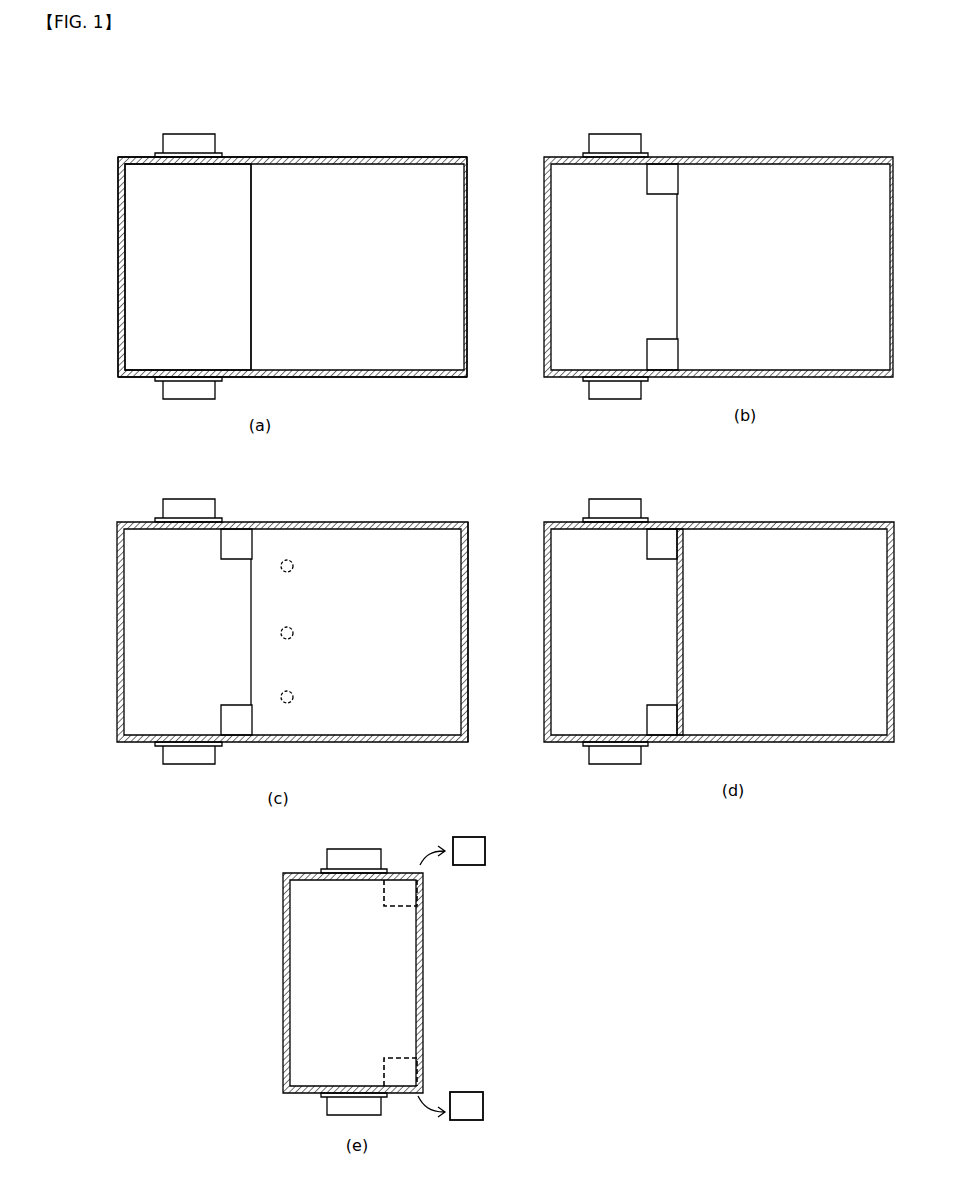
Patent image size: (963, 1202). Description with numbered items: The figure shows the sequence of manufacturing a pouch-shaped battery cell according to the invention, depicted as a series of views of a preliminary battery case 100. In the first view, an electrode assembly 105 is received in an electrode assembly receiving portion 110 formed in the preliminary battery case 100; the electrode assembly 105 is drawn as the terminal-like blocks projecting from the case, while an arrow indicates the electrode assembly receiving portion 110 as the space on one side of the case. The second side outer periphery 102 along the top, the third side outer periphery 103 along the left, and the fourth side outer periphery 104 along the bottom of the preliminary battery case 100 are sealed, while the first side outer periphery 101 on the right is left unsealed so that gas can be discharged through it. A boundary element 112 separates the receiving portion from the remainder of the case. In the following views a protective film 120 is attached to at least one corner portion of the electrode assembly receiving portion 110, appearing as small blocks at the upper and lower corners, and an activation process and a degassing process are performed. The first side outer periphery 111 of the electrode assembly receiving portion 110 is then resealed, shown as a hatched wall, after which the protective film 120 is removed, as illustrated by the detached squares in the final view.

The preliminary battery case 100 is at (312, 185).
The first side outer periphery 101 is at (467, 212).
The second side outer periphery 102 is at (408, 158).
The third side outer periphery 103 is at (118, 338).
The fourth side outer periphery 104 is at (380, 377).
The electrode assembly 105 is at (172, 141).
The electrode assembly receiving portion 110 is at (150, 260).
The first side outer periphery of the electrode assembly receiving portion 111 is at (675, 302).
The partition plate 112 is at (253, 160).
The protective film 120 is at (662, 170).